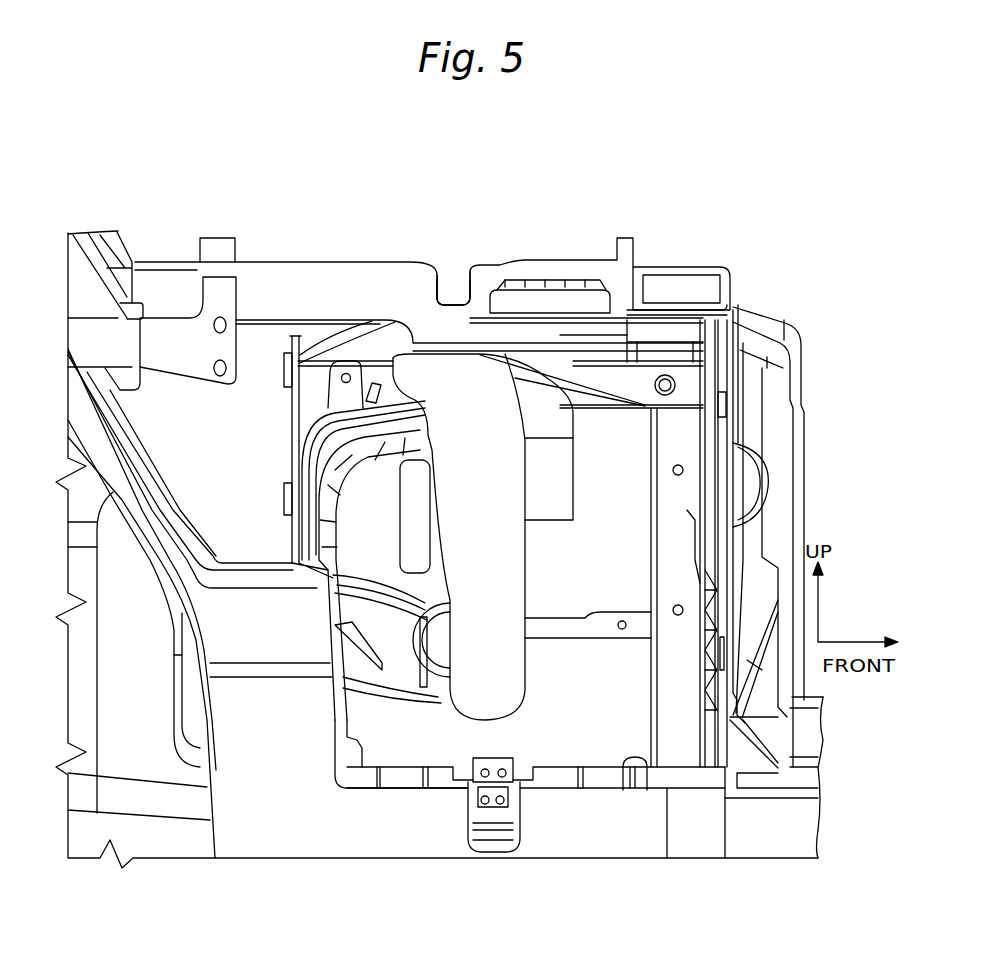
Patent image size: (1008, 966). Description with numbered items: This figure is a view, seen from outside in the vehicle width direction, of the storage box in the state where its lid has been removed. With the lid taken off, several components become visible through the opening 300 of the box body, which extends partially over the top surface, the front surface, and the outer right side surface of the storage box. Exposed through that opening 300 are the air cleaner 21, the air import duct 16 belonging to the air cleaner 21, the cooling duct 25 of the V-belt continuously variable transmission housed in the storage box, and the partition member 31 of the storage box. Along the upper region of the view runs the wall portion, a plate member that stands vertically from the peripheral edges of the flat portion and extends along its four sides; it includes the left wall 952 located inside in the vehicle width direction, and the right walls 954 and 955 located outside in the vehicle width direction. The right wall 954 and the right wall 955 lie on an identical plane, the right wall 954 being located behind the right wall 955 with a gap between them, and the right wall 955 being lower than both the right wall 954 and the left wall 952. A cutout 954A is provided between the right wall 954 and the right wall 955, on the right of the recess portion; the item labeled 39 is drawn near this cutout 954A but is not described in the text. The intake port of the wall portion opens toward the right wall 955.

The right wall 954 is at (320, 287).
The cooling duct 25 is at (365, 350).
The cutout 954A is at (427, 287).
The recess 39 is at (428, 250).
The left wall 952 is at (557, 270).
The right wall 955 is at (605, 310).
The air cleaner 21 is at (393, 717).
The air import duct 16 is at (467, 690).
The partition member 31 is at (593, 727).
The opening 300 is at (643, 790).